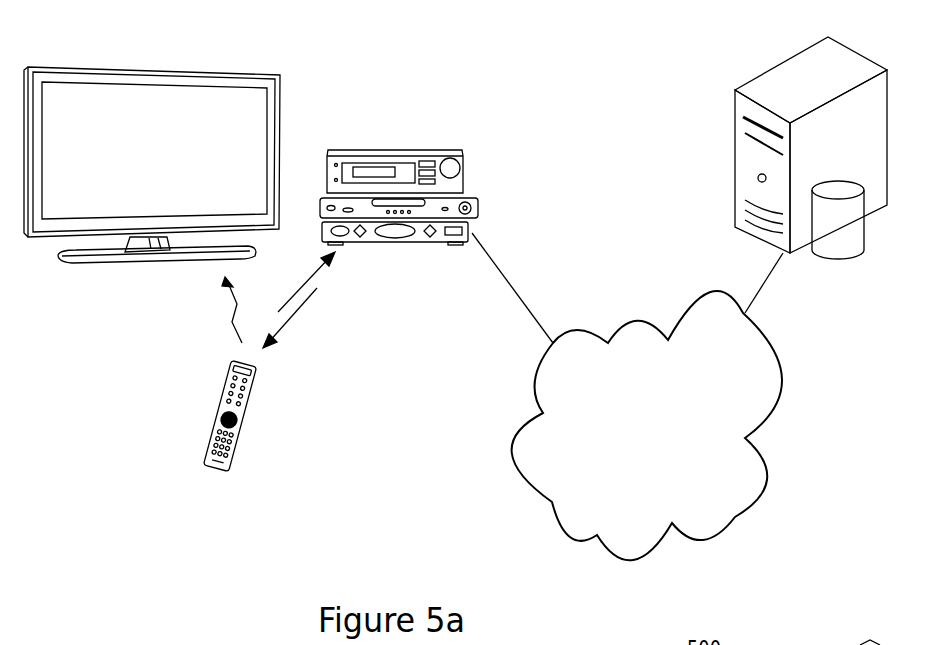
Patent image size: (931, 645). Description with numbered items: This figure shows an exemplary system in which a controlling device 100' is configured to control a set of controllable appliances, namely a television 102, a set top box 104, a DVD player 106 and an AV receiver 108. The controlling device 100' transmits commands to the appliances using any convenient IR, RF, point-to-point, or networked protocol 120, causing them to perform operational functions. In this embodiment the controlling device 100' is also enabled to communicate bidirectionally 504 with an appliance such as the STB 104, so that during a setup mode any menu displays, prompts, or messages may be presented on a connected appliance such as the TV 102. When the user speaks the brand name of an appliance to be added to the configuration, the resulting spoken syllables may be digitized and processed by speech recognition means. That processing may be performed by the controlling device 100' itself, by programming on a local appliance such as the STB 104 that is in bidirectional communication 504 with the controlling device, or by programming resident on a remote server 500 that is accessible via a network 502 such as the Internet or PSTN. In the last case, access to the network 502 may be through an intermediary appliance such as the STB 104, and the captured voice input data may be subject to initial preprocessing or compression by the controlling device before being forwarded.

The television 102 is at (245, 70).
The AV receiver 108 is at (443, 150).
The DVD player 106 is at (463, 197).
The set top box 104 is at (387, 243).
The controlling device 100' is at (244, 427).
The protocol 120 is at (227, 307).
The bidirectional communication 504 is at (305, 305).
The network 502 is at (765, 503).
The remote server 500 is at (755, 75).